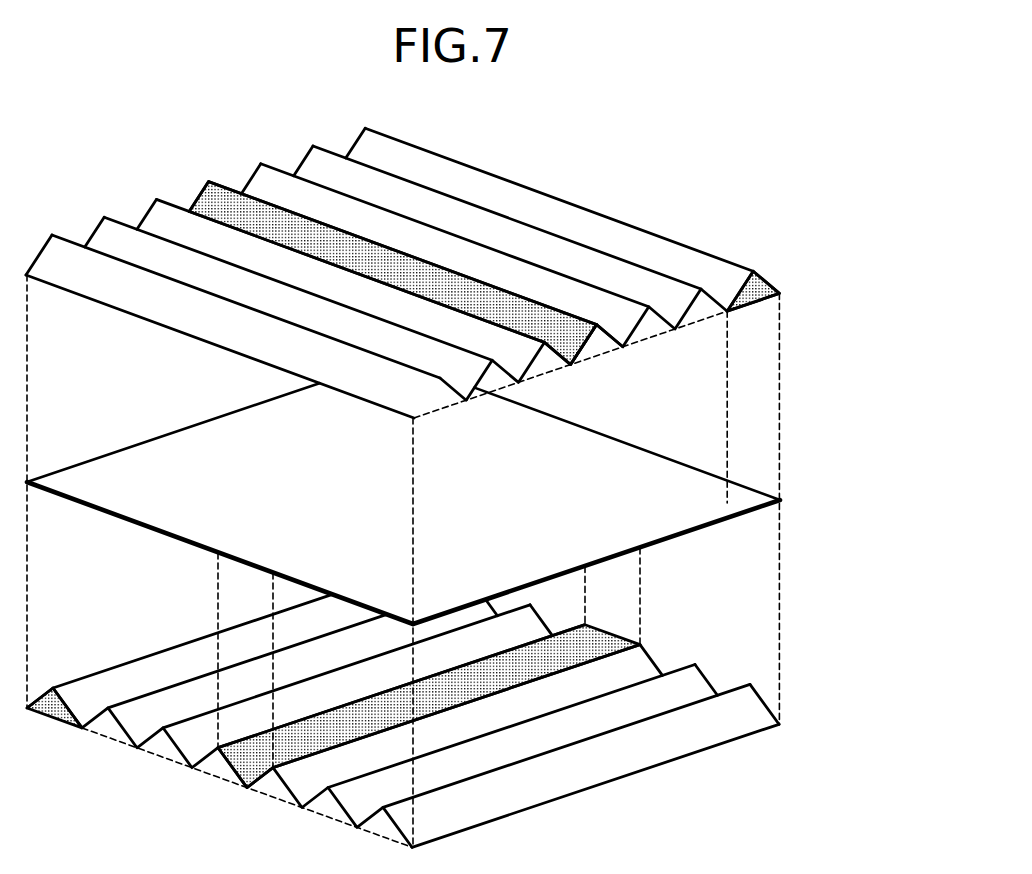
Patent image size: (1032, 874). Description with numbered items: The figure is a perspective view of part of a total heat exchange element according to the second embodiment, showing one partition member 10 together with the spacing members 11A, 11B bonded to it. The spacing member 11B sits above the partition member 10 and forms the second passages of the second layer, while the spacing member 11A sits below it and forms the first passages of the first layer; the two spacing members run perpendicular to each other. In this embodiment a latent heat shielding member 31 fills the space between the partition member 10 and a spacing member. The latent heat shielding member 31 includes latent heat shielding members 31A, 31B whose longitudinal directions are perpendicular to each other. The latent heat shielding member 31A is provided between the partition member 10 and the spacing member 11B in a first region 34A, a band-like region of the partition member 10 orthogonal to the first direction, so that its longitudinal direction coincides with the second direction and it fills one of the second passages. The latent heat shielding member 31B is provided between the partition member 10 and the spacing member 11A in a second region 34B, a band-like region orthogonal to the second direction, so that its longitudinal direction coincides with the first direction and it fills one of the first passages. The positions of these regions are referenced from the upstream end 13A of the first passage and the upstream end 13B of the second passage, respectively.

The partition member 10 is at (202, 423).
The spacing member 11A is at (142, 679).
The spacing member 11B is at (560, 216).
The upstream end of the first passage 13A is at (107, 740).
The upstream end of the second passage 13B is at (705, 318).
The latent heat shielding member 31 is at (868, 378).
The latent heat shielding member 31A is at (780, 294).
The latent heat shielding member 31B is at (610, 633).
The first region 34A is at (727, 503).
The second region 34B is at (273, 580).